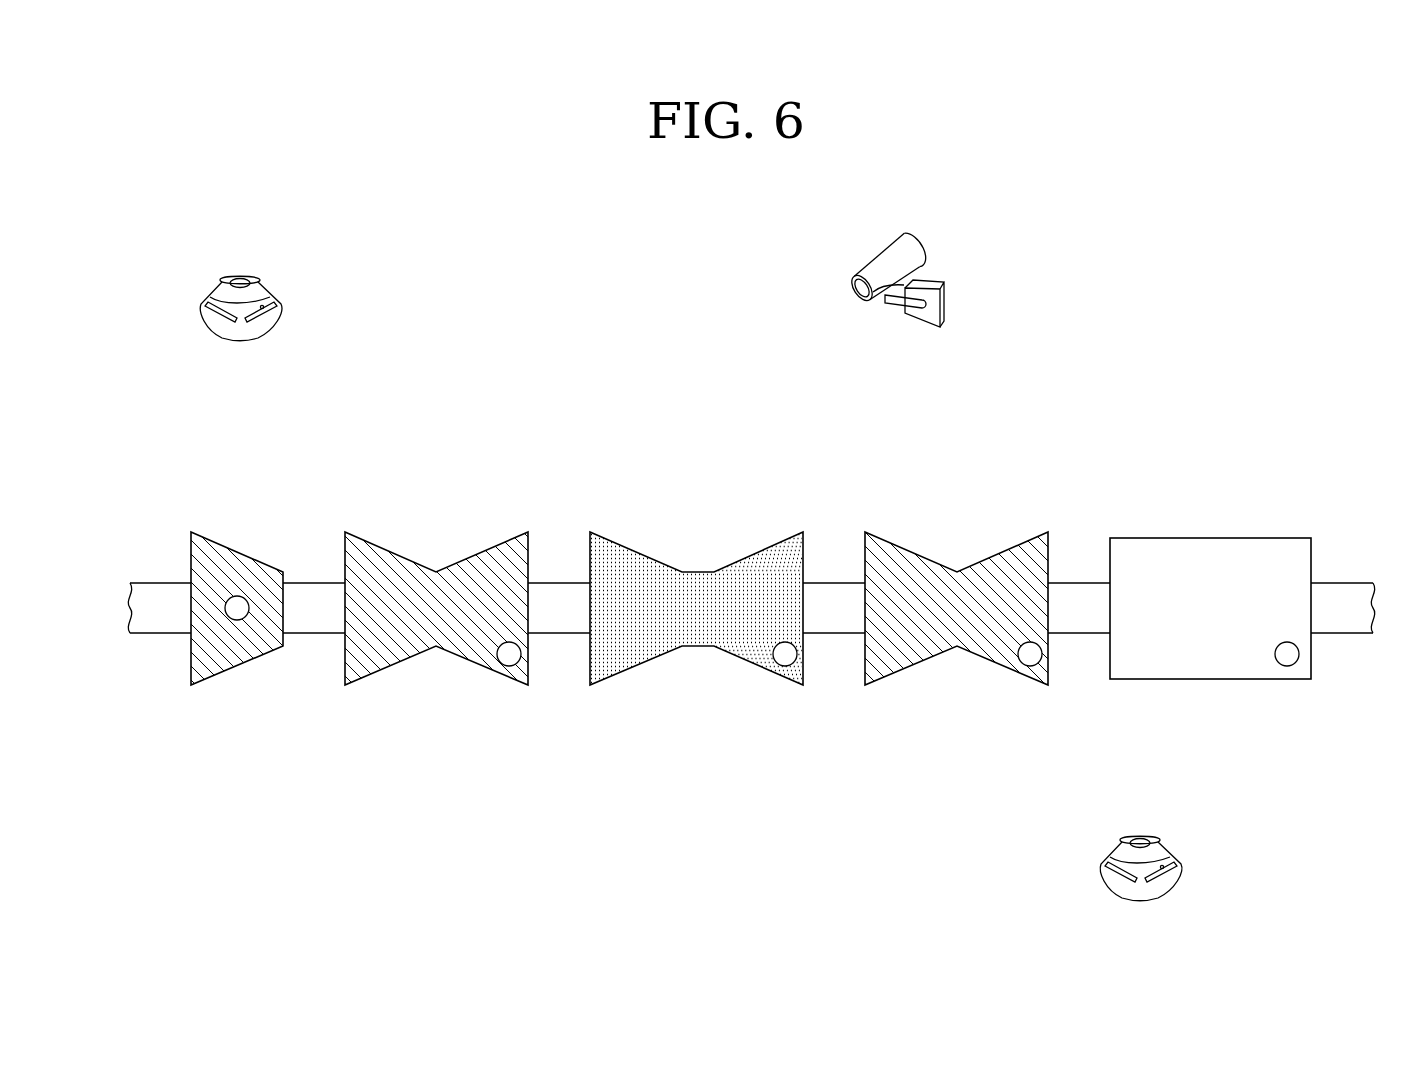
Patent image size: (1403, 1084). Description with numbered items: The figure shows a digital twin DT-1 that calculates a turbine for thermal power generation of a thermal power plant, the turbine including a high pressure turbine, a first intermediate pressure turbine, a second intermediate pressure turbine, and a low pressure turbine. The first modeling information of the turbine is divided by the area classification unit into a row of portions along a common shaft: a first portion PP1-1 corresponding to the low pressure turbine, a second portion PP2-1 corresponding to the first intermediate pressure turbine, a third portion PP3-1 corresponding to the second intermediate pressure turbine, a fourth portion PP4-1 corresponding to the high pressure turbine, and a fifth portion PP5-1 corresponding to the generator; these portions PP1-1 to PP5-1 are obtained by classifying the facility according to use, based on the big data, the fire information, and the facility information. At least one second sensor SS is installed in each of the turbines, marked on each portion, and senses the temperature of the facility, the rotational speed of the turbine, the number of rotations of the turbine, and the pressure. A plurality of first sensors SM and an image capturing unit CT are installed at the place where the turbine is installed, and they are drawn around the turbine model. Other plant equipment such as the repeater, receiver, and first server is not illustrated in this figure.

The first sensor SM is at (282, 312).
The image capturing unit CT is at (943, 305).
The digital twin DT-1 is at (751, 522).
The first portion PP1-1 is at (240, 553).
The second portion PP2-1 is at (395, 553).
The third portion PP3-1 is at (697, 571).
The fourth portion PP4-1 is at (917, 553).
The fifth portion PP5-1 is at (1245, 538).
The second sensor SS is at (237, 620).